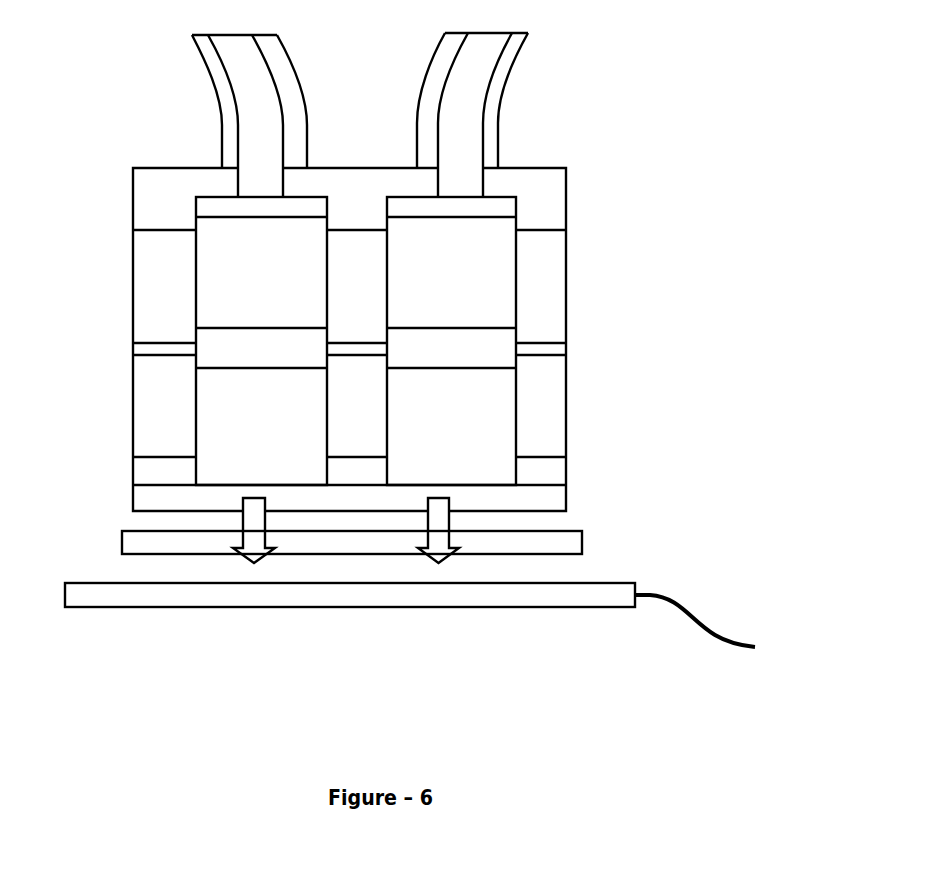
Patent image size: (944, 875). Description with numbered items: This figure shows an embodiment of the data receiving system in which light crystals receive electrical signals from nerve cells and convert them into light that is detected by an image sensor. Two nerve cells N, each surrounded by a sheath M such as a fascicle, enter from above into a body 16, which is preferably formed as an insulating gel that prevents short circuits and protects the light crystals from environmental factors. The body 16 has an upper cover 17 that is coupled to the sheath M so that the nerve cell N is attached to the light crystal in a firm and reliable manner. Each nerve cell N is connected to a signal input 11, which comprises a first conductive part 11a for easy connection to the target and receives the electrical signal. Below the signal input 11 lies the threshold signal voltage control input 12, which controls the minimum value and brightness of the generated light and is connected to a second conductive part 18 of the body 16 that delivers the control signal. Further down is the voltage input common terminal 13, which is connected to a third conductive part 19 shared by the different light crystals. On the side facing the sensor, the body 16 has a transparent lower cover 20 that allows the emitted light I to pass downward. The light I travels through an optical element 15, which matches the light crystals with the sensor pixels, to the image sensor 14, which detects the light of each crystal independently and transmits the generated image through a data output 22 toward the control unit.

The signal input 11 is at (505, 262).
The first conductive part 11a is at (257, 208).
The threshold signal voltage control input 12 is at (498, 353).
The voltage input common terminal 13 is at (498, 430).
The image sensor 14 is at (483, 598).
The optical element 15 is at (568, 540).
The body 16 is at (155, 262).
The upper cover 17 is at (555, 200).
The second conductive part 18 is at (155, 350).
The third conductive part 19 is at (163, 468).
The lower cover 20 is at (552, 498).
The data output 22 is at (707, 633).
The sheath M is at (517, 48).
The nerve cell N is at (475, 67).
The light I is at (435, 530).